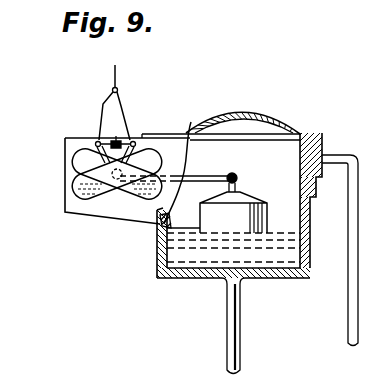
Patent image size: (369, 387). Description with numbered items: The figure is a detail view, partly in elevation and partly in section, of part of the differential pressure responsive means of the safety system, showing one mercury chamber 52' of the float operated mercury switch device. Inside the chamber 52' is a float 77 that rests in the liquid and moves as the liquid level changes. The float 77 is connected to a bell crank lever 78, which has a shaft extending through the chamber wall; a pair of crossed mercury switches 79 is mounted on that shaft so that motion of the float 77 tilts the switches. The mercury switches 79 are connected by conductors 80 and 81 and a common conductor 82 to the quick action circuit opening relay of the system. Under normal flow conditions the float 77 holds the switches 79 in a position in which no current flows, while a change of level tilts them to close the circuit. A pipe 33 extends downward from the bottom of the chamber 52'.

The drain pipe 33 is at (228, 354).
The float chamber 52' is at (247, 239).
The float 77 is at (248, 200).
The bell crank lever 78 is at (205, 177).
The mercury switches 79 is at (82, 177).
The conductor 80 is at (125, 117).
The conductor 81 is at (100, 127).
The common conductor 82 is at (115, 78).